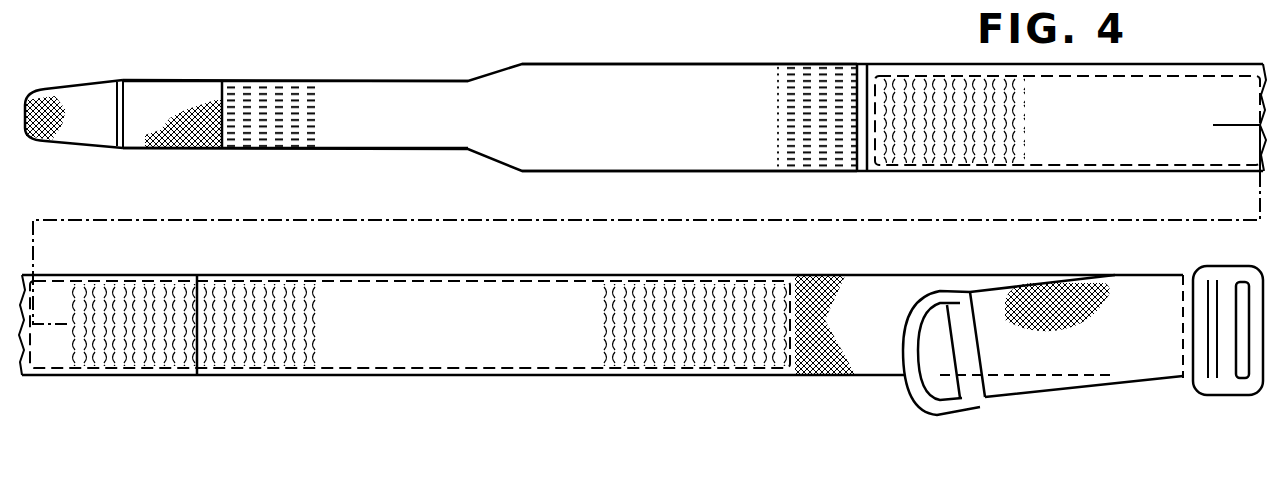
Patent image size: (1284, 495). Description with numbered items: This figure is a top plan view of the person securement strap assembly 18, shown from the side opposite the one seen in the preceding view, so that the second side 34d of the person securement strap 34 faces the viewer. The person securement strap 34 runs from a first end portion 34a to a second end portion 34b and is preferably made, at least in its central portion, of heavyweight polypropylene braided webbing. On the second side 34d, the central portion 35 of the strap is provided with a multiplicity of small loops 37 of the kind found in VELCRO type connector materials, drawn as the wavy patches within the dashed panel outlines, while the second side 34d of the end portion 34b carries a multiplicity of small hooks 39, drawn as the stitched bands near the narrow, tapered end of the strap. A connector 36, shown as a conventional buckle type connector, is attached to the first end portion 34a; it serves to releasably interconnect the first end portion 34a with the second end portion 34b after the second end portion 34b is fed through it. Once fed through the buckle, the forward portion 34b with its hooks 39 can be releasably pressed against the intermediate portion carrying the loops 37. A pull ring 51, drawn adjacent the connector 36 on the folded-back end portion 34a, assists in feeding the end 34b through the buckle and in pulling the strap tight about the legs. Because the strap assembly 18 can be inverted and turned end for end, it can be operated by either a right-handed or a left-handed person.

The person securement strap assembly 18 is at (450, 63).
The person securement strap 34 is at (630, 96).
The first end portion 34a is at (992, 303).
The second end portion 34b is at (340, 92).
The second side 34d is at (775, 225).
The central portion 35 is at (1162, 67).
The connector 36 is at (1212, 388).
The small loops 37 is at (940, 97).
The small hooks 39 is at (282, 86).
The pull ring 51 is at (918, 388).